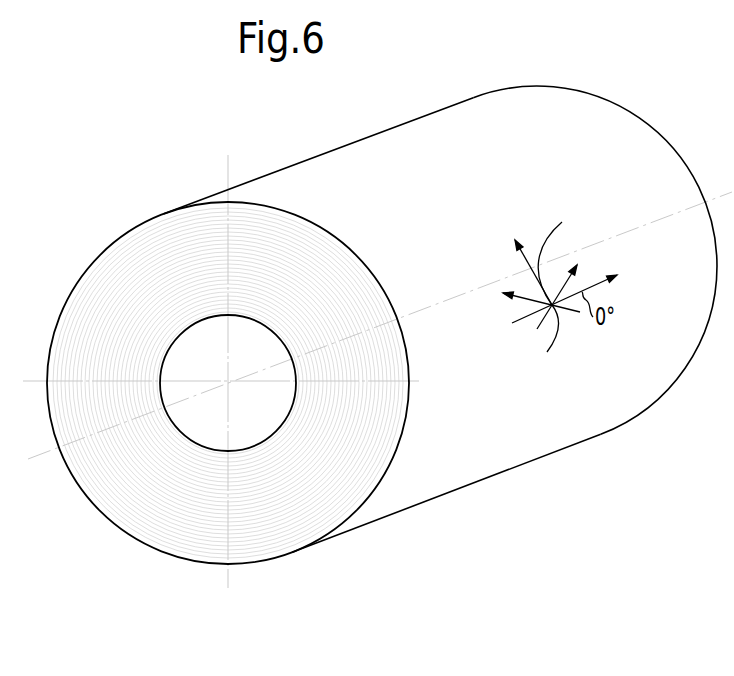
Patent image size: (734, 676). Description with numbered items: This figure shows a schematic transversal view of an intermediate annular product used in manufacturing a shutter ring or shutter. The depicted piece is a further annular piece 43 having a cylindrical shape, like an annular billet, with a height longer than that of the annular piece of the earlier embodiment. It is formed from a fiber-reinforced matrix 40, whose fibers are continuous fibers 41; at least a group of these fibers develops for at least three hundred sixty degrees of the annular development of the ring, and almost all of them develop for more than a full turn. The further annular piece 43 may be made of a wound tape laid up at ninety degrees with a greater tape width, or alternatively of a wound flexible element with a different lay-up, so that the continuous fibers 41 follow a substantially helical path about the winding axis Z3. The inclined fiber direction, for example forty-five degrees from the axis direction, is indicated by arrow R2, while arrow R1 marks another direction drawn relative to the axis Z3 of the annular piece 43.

The fiber-reinforced matrix 40 is at (263, 239).
The continuous fibers 41 is at (130, 307).
The further annular piece 43 is at (507, 492).
The axis Z3 is at (47, 458).
The first direction R1 is at (546, 273).
The arrow R2 is at (572, 286).